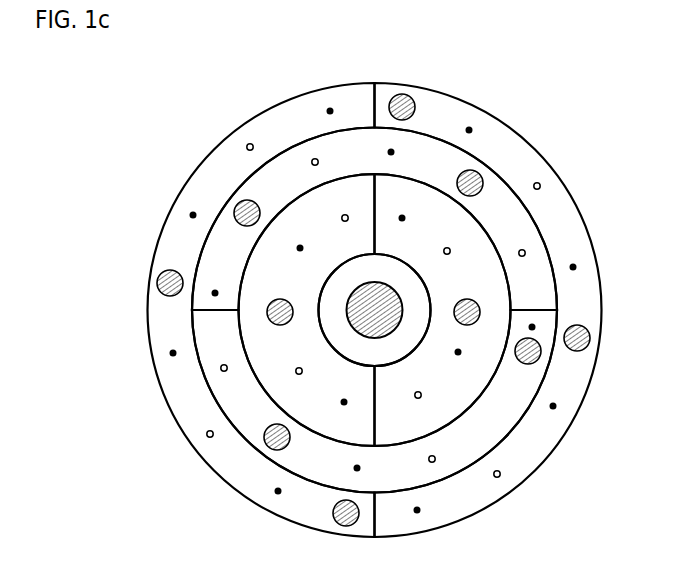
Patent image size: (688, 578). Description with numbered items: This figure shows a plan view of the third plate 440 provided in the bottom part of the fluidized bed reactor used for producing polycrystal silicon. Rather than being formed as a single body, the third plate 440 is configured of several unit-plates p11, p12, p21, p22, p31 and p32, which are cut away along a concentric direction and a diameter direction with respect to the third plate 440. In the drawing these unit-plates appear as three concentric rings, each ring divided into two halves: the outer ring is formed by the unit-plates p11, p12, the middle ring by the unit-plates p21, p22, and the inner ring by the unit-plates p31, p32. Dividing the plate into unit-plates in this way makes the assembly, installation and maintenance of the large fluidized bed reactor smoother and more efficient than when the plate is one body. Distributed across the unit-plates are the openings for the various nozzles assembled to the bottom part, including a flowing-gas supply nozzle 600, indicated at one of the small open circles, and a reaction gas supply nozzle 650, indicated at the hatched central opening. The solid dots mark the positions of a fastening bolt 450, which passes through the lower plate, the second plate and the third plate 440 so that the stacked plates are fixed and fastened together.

The third plate 440 is at (93, 116).
The unit-plate p32 is at (382, 190).
The unit-plate p31 is at (303, 207).
The unit-plate p21 is at (220, 233).
The unit-plate p22 is at (195, 324).
The unit-plate p11 is at (157, 356).
The unit-plate p12 is at (387, 518).
The reaction gas supply nozzle 650 is at (383, 290).
The fastening bolt 450 is at (575, 266).
The flowing-gas supply nozzle 600 is at (539, 183).